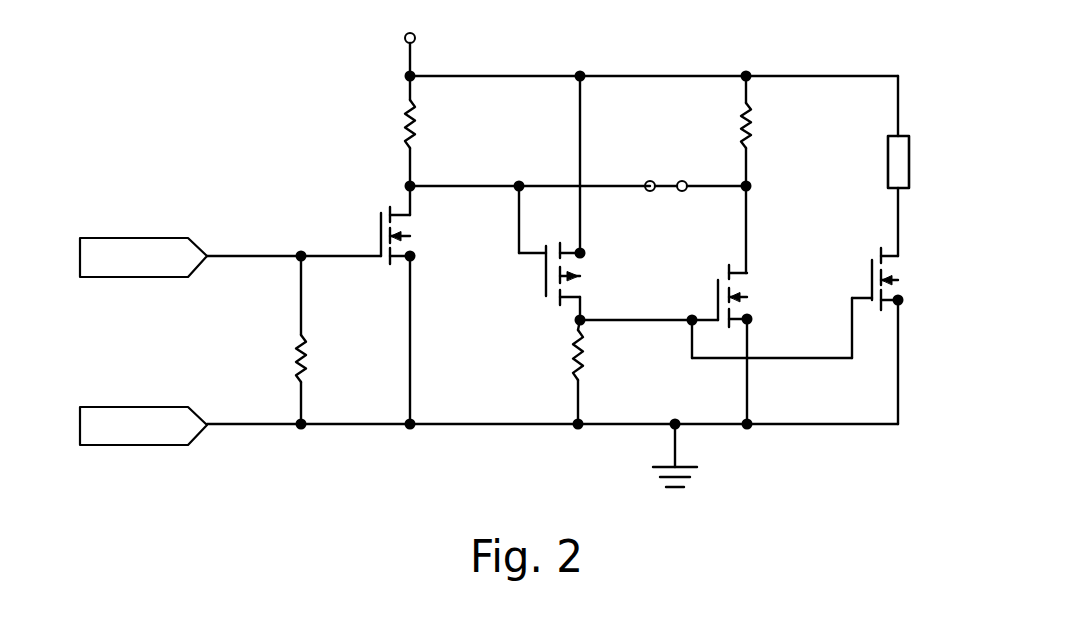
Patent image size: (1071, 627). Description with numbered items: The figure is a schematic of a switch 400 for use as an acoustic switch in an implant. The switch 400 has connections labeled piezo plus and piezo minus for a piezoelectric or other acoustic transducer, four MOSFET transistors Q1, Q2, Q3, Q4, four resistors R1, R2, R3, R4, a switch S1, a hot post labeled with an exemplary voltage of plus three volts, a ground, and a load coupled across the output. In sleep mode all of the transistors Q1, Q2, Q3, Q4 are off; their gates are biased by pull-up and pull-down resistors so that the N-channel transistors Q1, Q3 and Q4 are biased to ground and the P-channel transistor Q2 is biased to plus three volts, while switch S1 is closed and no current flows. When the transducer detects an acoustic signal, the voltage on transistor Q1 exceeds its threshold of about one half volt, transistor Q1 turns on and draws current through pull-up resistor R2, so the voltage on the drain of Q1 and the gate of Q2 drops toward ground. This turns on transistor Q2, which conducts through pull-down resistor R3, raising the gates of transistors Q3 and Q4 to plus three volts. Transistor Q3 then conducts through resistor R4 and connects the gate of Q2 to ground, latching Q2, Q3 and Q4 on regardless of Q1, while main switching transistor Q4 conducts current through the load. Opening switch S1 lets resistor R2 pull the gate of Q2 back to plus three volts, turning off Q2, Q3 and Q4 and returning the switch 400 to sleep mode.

The switch 400 is at (347, 141).
The resistor R1 is at (350, 340).
The pull-up resistor R2 is at (456, 131).
The pull-down resistor R3 is at (630, 372).
The resistor R4 is at (798, 131).
The transistor Q1 is at (422, 225).
The P-channel transistor Q2 is at (576, 253).
The transistor Q3 is at (757, 296).
The main switching transistor Q4 is at (910, 279).
The switch S1 is at (666, 168).